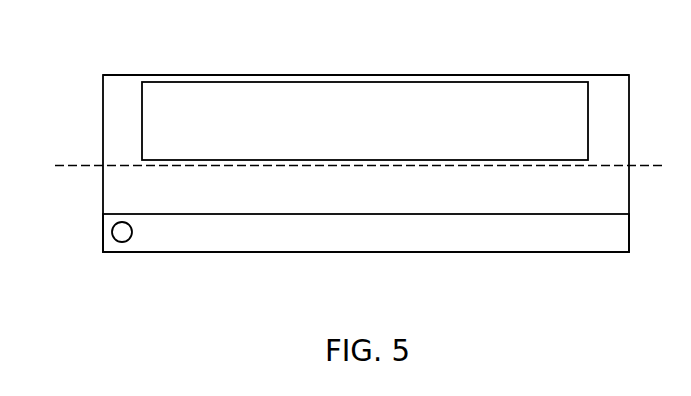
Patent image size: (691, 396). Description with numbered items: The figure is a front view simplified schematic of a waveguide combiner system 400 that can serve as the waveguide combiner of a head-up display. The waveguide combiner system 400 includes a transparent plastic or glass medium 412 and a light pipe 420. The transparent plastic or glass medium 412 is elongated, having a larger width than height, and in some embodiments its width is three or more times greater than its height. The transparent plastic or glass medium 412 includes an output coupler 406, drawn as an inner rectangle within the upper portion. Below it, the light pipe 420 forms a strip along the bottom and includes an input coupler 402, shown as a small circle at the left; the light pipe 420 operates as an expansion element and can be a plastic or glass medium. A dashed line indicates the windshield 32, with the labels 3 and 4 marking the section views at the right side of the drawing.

The waveguide combiner system 400 is at (584, 76).
The transparent plastic or glass medium 412 is at (503, 75).
The output coupler 406 is at (176, 88).
The light pipe 420 is at (618, 237).
The input coupler 402 is at (121, 243).
The windshield 32 is at (94, 165).
The section view indicator FIG. 3 is at (685, 140).
The section view indicator FIG. 4 is at (685, 230).